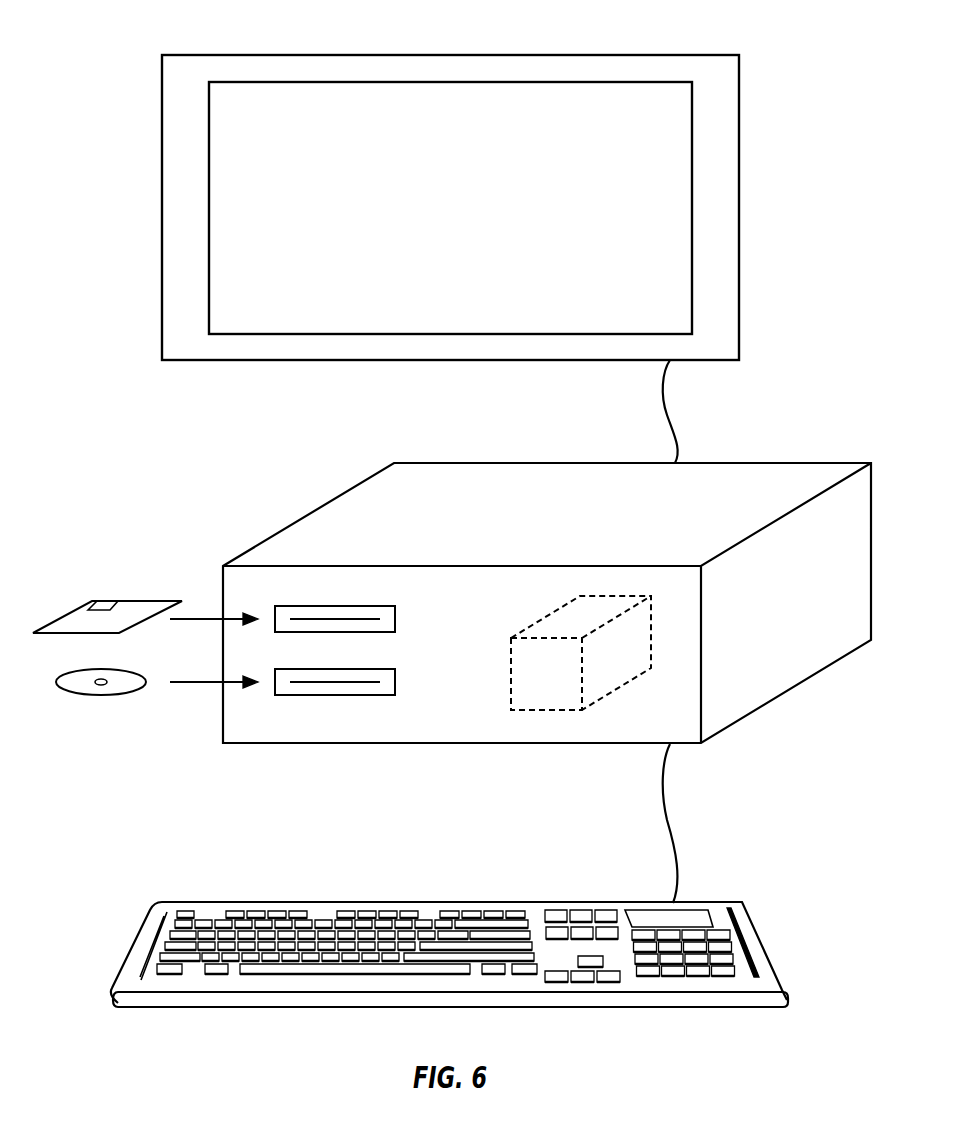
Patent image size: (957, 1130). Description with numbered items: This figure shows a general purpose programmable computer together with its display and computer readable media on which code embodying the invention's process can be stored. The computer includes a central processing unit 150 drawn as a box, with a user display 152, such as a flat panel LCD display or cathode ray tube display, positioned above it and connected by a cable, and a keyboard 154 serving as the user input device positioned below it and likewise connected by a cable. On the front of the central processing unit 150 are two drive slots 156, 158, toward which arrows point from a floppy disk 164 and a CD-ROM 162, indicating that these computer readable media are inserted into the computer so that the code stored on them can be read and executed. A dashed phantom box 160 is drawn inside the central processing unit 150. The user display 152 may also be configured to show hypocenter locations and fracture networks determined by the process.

The central processing unit 150 is at (797, 463).
The user display 152 is at (675, 55).
The keyboard 154 is at (723, 903).
The disk drive 156 is at (357, 669).
The disk drive 158 is at (357, 606).
The memory / processor (phantom) 160 is at (511, 648).
The CD-ROM 162 is at (137, 670).
The floppy disk 164 is at (137, 601).